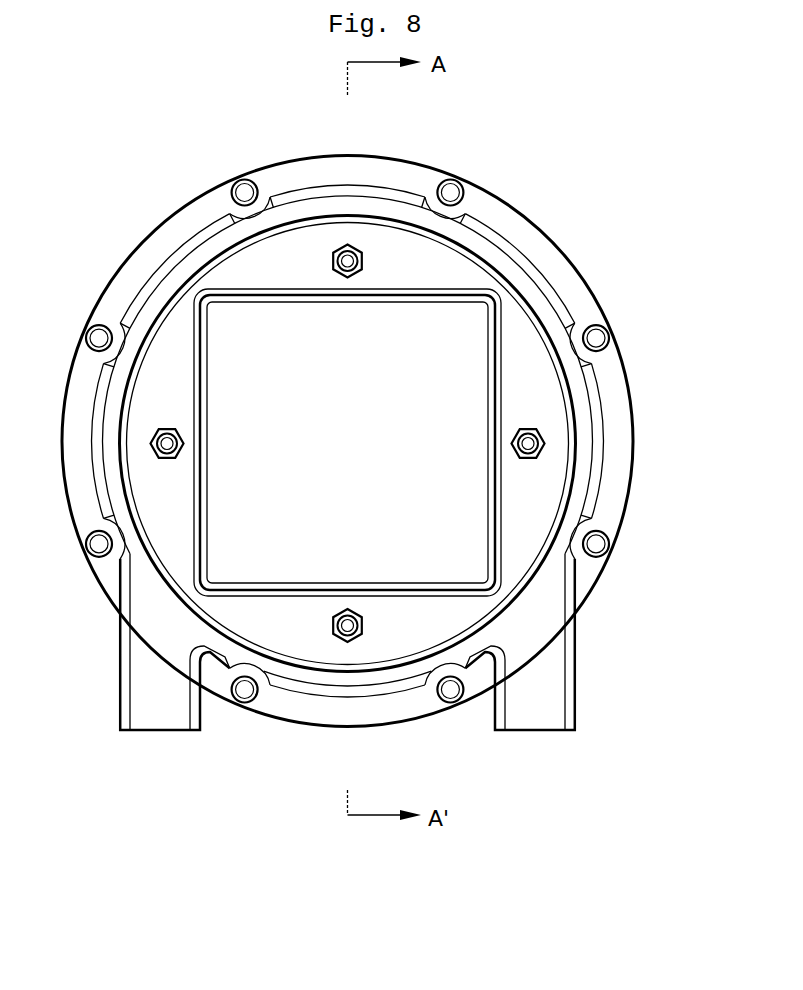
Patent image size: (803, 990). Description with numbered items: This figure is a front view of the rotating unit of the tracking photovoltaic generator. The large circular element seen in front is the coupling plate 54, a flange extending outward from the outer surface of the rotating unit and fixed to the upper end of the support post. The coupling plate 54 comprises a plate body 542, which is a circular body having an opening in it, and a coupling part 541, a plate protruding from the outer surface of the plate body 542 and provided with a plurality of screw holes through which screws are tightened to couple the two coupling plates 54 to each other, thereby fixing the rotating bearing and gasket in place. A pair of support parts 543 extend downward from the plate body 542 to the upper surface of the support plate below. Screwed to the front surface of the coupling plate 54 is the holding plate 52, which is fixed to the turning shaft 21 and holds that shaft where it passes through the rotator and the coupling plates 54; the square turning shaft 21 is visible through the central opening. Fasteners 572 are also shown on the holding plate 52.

The turning shaft 21 is at (387, 353).
The coupling part 541 is at (560, 250).
The plate body 542 is at (178, 275).
The coupling plate 54 is at (632, 412).
The holding plate 52 is at (520, 560).
The fastening nut 572 is at (336, 643).
The support part 543 is at (143, 698).